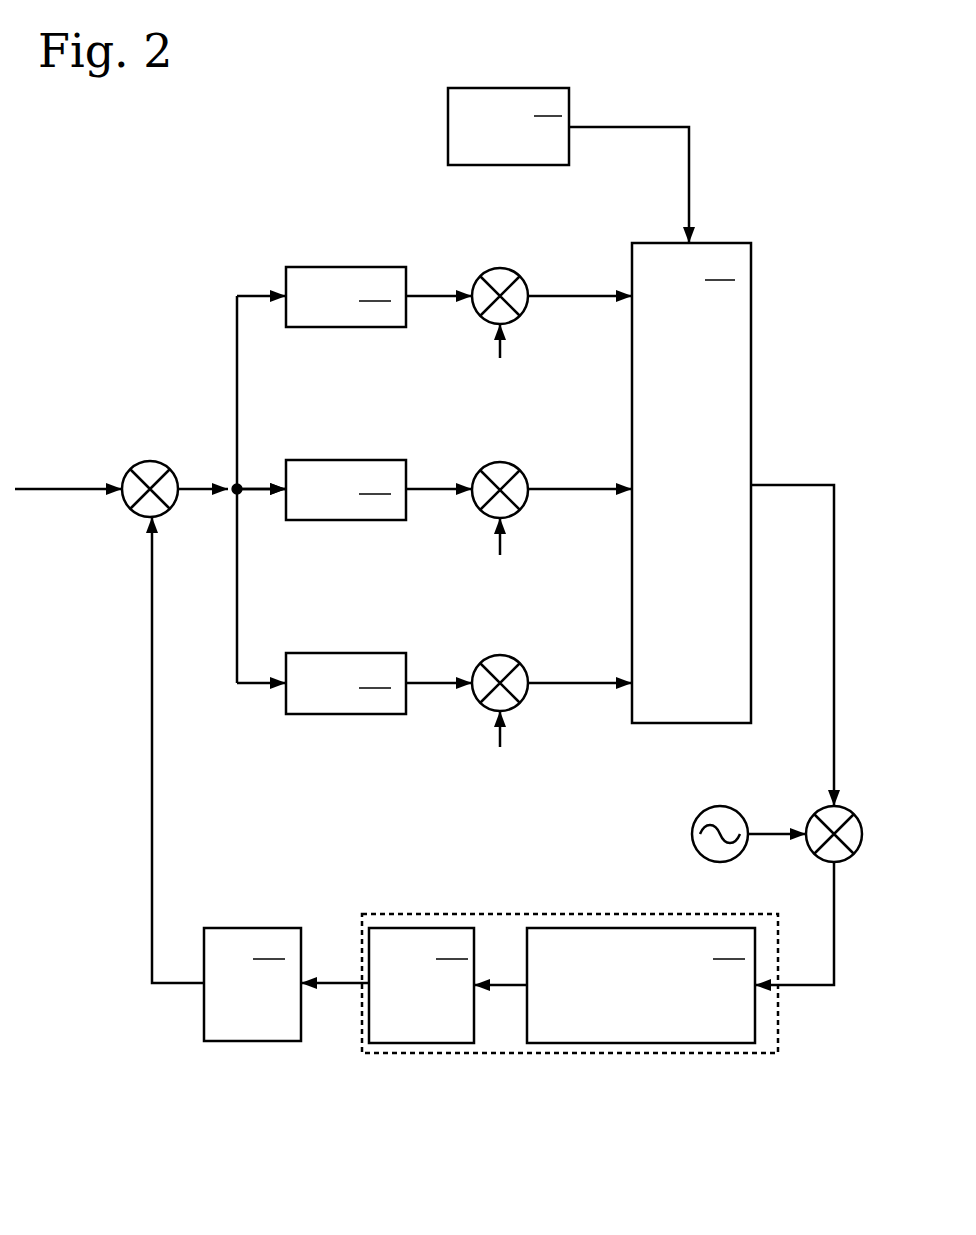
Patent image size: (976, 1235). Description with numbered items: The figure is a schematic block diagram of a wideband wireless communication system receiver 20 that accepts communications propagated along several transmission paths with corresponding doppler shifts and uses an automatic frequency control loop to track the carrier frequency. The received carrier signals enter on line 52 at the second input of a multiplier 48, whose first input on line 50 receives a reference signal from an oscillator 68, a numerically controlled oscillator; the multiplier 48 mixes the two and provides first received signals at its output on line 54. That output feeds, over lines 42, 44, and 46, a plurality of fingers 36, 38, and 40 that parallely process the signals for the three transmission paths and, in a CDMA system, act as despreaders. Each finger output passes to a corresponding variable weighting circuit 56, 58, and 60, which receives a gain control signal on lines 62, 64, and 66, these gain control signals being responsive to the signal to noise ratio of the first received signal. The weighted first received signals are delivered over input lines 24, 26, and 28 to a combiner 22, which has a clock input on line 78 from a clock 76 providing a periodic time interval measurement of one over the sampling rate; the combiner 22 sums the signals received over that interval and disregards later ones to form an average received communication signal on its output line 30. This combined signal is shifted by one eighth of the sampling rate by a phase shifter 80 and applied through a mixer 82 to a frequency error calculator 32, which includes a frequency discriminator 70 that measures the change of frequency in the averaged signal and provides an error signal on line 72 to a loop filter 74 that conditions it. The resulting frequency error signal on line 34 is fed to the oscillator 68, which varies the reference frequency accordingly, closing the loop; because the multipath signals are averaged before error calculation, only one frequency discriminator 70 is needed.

The wideband wireless communication system receiver 20 is at (795, 160).
The combiner 22 is at (691, 483).
The input line 24 is at (550, 295).
The input line 26 is at (552, 488).
The input line 28 is at (555, 682).
The output line 30 is at (834, 960).
The frequency error calculator 32 is at (778, 1044).
The output line 34 is at (340, 987).
The finger 36 is at (379, 297).
The finger 38 is at (379, 490).
The finger 40 is at (379, 683).
The input line 42 is at (250, 294).
The input line 44 is at (252, 487).
The input line 46 is at (252, 681).
The multiplier 48 is at (158, 462).
The line 50 is at (152, 737).
The line 52 is at (80, 492).
The output line 54 is at (210, 492).
The variable weighting circuit 56 is at (498, 268).
The variable weighting circuit 58 is at (498, 462).
The variable weighting circuit 60 is at (500, 655).
The gain control signal line 62 is at (495, 350).
The gain control signal line 64 is at (495, 543).
The gain control signal line 66 is at (495, 736).
The oscillator 68 is at (252, 984).
The frequency discriminator 70 is at (641, 985).
The output line 72 is at (514, 988).
The loop filter 74 is at (421, 985).
The clock 76 is at (508, 126).
The output line 78 is at (627, 130).
The phase shifter 80 is at (698, 810).
The mixer 82 is at (856, 814).